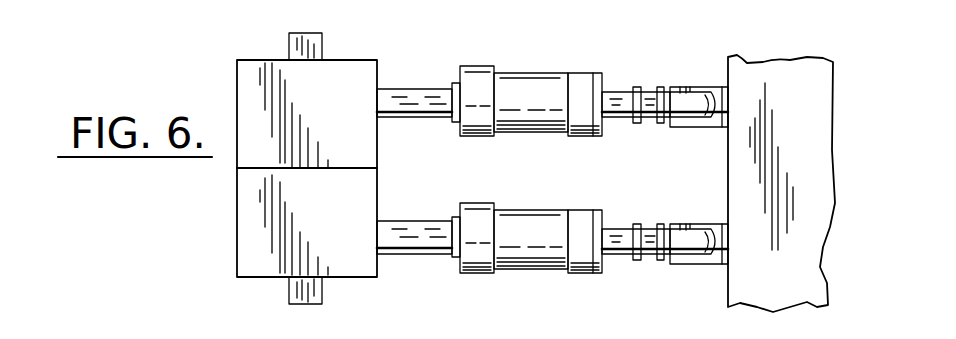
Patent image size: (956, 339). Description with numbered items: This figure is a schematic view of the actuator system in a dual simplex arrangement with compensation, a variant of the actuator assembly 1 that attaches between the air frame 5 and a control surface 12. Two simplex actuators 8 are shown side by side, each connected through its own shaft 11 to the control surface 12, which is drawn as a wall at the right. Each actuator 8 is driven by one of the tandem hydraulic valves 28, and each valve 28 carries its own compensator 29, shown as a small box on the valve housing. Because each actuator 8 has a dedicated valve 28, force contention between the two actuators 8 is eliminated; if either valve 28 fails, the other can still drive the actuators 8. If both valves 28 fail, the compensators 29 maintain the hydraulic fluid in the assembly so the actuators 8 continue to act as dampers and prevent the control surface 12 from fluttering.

The actuator assembly 1 is at (424, 334).
The air frame 5 is at (562, 338).
The actuator 8 is at (547, 73).
The shaft 11 is at (392, 89).
The control surface 12 is at (728, 165).
The tandem hydraulic valve 28 is at (372, 60).
The compensator 29 is at (312, 33).